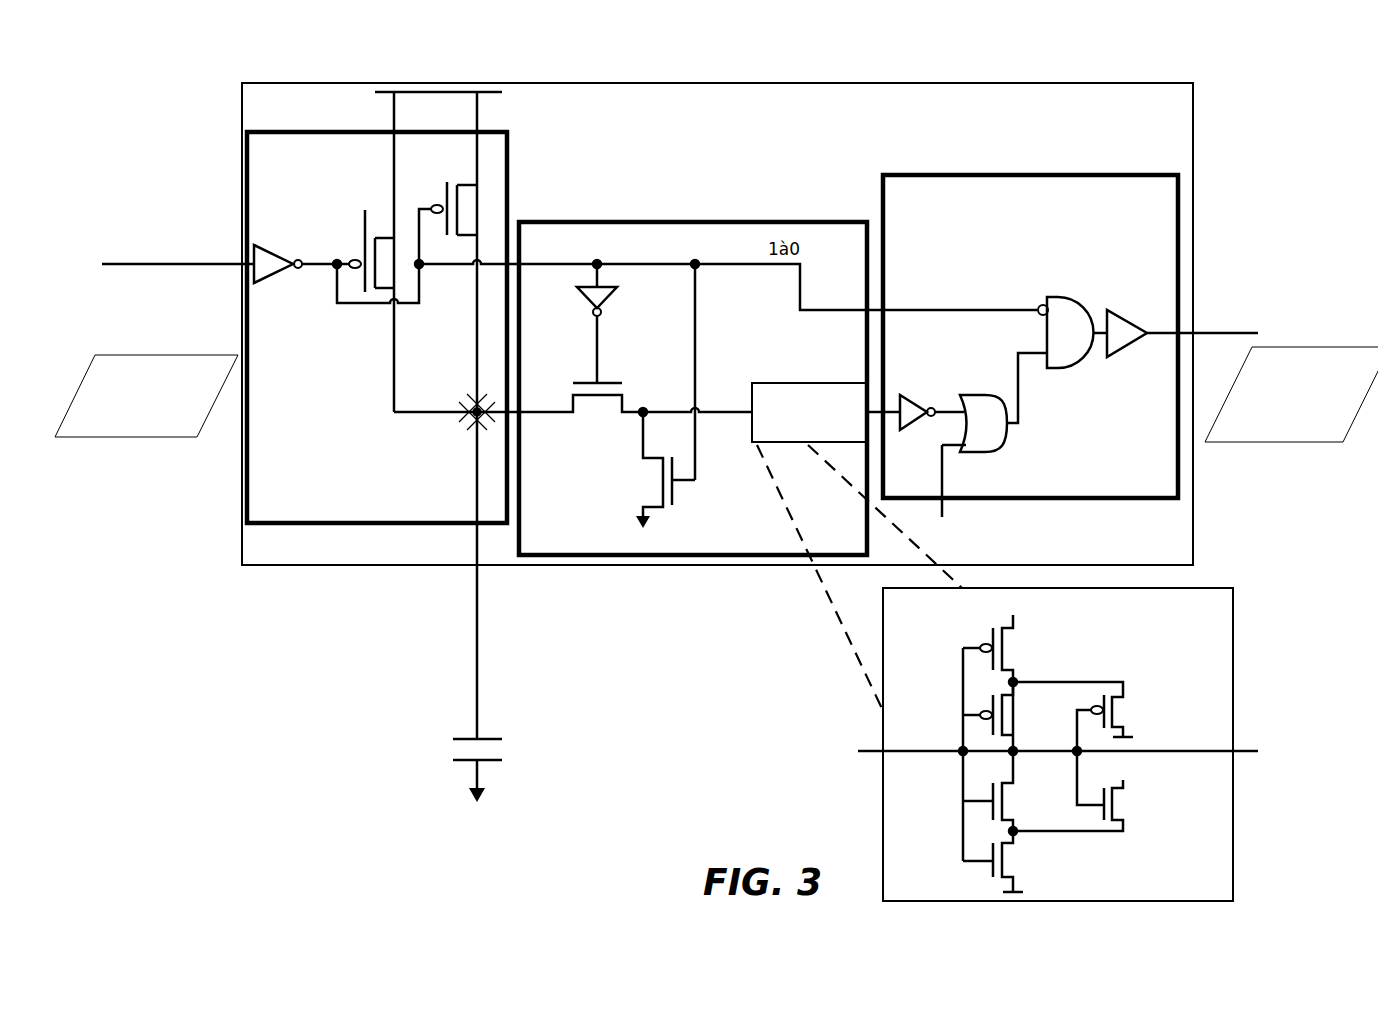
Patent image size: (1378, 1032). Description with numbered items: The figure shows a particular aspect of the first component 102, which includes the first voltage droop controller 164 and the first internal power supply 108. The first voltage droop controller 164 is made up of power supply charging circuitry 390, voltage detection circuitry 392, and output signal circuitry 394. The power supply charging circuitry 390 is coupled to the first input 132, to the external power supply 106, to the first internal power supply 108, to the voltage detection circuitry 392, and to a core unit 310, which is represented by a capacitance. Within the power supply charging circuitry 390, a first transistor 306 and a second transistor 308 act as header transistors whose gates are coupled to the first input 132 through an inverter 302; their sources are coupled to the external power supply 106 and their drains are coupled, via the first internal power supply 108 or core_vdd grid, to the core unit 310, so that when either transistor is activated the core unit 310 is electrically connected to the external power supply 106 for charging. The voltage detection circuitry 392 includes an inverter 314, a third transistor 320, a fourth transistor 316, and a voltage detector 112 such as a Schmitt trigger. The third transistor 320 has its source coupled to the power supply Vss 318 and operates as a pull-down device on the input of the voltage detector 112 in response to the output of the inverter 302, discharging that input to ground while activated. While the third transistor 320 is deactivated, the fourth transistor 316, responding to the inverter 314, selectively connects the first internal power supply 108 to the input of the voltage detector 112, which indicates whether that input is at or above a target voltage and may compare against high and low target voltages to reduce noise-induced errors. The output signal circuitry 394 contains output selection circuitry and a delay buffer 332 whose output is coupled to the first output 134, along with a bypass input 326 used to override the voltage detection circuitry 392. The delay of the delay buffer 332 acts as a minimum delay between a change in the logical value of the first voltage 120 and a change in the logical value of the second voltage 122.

The first component 102 is at (190, 78).
The external power supply 106 is at (447, 390).
The first voltage droop controller 164 is at (717, 324).
The output signal circuitry 394 is at (1118, 174).
The first output 134 is at (1213, 333).
The second voltage 122 is at (1291, 394).
The first voltage 120 is at (146, 396).
The first input 132 is at (200, 264).
The inverter 302 is at (287, 268).
The first transistor 306 is at (365, 210).
The second transistor 308 is at (447, 182).
The first internal power supply 108 is at (463, 447).
The power supply charging circuitry 390 is at (376, 526).
The voltage detection circuitry 392 is at (740, 556).
The inverter 314 is at (607, 288).
The fourth transistor 316 is at (622, 383).
The third transistor 320 is at (673, 503).
The power supply (Vss) 318 is at (904, 706).
The voltage detector 112 is at (1005, 642).
The delay buffer 332 is at (1112, 306).
The bypass input 326 is at (976, 494).
The core unit 310 is at (399, 770).